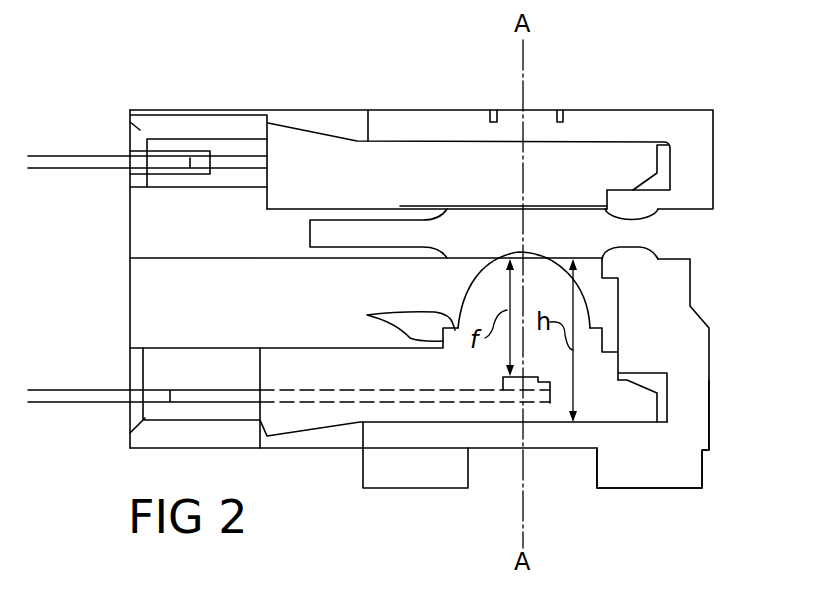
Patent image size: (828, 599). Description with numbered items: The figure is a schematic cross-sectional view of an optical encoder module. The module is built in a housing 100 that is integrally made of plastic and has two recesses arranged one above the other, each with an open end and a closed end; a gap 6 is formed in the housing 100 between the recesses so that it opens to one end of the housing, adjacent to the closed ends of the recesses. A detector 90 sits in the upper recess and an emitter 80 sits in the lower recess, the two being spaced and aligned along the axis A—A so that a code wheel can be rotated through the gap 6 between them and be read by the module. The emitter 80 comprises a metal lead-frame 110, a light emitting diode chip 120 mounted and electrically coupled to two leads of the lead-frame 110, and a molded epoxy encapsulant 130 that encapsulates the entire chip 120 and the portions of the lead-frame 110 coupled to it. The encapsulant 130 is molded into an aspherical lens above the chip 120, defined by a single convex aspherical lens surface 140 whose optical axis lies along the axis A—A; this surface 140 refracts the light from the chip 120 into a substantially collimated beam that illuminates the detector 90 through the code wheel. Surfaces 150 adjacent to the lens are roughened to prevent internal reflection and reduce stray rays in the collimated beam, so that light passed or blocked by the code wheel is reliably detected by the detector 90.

The gap 6 is at (603, 235).
The emitter 80 is at (615, 400).
The detector 90 is at (477, 167).
The housing 100 is at (622, 127).
The metal lead-frame 110 is at (322, 401).
The light emitting diode chip 120 is at (552, 384).
The molded epoxy encapsulant 130 is at (582, 366).
The lens surface 140 is at (587, 302).
The roughened surfaces 150 is at (384, 322).